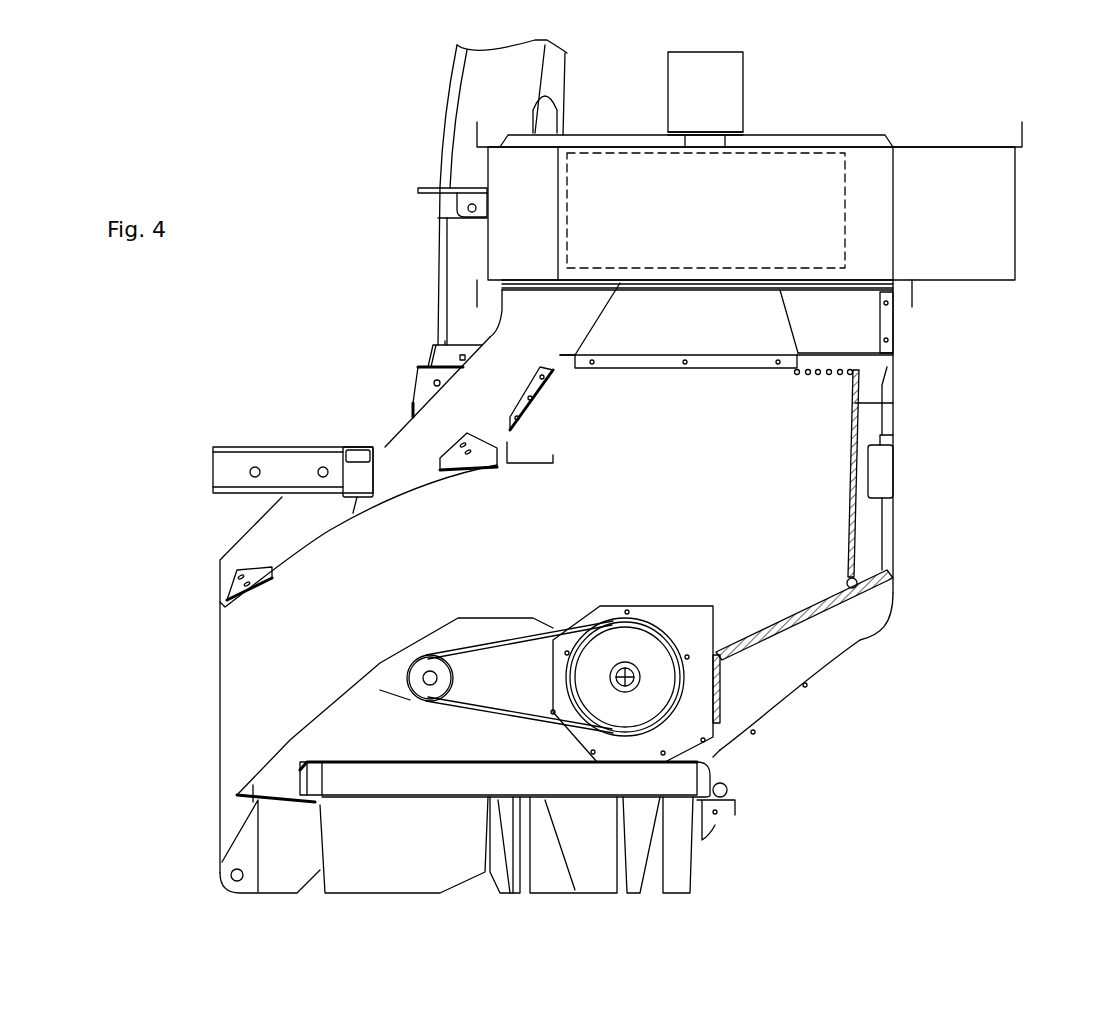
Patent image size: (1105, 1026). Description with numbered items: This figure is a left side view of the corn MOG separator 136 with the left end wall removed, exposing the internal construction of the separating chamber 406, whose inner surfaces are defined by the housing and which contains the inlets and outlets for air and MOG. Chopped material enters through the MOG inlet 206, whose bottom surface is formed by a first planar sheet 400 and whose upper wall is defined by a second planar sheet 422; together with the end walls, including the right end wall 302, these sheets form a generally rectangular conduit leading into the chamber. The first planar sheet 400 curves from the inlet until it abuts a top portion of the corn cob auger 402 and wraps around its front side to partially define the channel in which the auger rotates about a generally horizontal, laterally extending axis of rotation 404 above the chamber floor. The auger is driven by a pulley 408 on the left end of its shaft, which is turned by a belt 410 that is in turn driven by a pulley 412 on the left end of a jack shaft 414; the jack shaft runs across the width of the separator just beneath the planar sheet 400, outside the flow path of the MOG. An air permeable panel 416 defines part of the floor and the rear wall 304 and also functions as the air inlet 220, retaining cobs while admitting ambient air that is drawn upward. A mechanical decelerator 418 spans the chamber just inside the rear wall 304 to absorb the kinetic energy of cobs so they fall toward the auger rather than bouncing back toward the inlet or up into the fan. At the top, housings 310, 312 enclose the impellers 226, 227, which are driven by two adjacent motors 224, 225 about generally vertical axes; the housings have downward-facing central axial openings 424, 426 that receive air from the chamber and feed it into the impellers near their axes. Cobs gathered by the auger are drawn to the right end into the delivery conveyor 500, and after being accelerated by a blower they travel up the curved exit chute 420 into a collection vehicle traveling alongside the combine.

The corn MOG separator 136 is at (857, 810).
The inlet 206 is at (213, 707).
The air inlet 220 is at (813, 617).
The motor 224 is at (798, 87).
The motor 225 is at (743, 82).
The impeller 226 is at (749, 183).
The impeller 227 is at (777, 152).
The end wall 302 is at (652, 448).
The rear wall 304 is at (893, 428).
The housing 310 is at (770, 178).
The housing 312 is at (793, 193).
The first planar sheet 400 is at (378, 668).
The corn cob auger 402 is at (636, 614).
The axis of rotation 404 is at (630, 682).
The separating chamber 406 is at (637, 487).
The pulley 408 is at (657, 642).
The belt 410 is at (510, 640).
The pulley 412 is at (408, 690).
The jack shaft 414 is at (432, 673).
The air permeable panel 416 is at (720, 692).
The mechanical decelerator 418 is at (893, 403).
The curved exit chute 420 is at (450, 98).
The second planar sheet 422 is at (313, 543).
The central axial opening 424 is at (820, 330).
The central axial opening 426 is at (717, 292).
The delivery conveyor 500 is at (777, 713).